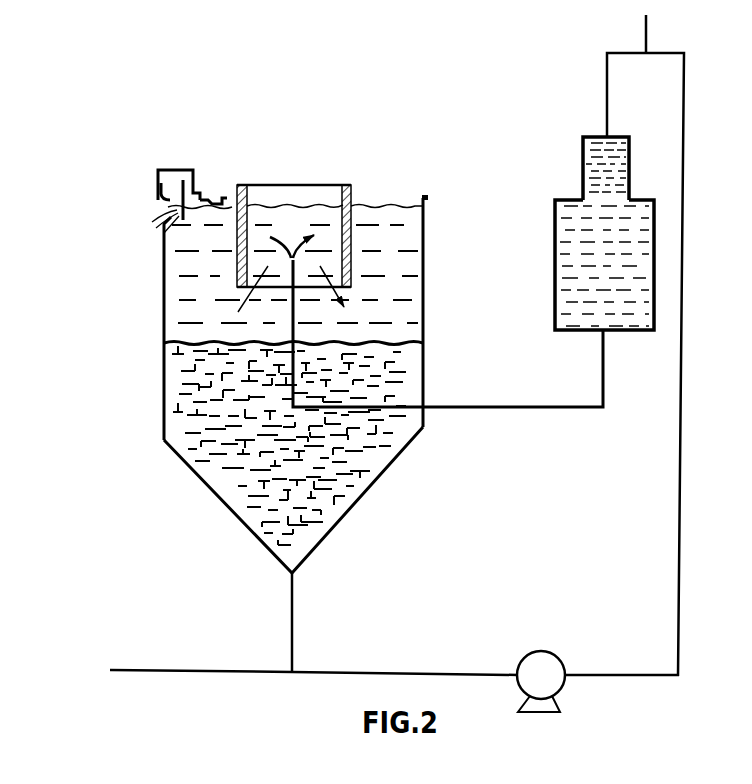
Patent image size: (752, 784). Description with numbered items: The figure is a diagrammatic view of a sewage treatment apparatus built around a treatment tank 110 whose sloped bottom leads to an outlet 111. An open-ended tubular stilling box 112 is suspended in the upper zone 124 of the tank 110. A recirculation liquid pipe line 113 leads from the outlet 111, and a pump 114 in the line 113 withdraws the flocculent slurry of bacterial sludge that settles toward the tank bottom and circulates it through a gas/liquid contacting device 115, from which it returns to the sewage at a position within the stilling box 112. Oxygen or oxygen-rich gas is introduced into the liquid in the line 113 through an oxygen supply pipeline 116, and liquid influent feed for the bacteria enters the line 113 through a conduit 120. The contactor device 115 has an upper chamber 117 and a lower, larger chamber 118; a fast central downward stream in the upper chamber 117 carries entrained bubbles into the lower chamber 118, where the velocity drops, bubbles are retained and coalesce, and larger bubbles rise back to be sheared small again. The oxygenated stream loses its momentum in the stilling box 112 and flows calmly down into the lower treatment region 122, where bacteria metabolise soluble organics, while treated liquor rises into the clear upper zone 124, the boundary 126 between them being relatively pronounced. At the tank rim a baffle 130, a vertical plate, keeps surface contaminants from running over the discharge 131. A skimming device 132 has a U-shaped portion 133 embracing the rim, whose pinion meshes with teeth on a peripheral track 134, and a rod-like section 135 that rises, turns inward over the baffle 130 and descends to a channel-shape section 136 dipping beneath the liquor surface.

The treatment tank 110 is at (158, 470).
The outlet 111 is at (287, 573).
The stilling box 112 is at (352, 190).
The recirculation liquid pipe line 113 is at (397, 673).
The pump 114 is at (552, 663).
The gas/liquid contacting device 115 is at (625, 345).
The oxygen supply pipeline 116 is at (645, 33).
The upper chamber 117 is at (583, 163).
The lower chamber 118 is at (578, 265).
The conduit 120 is at (132, 668).
The lower treatment region 122 is at (367, 487).
The upper zone 124 is at (413, 267).
The boundary 126 is at (423, 344).
The baffle 130 is at (178, 223).
The discharge 131 is at (172, 225).
The skimming device 132 is at (138, 197).
The U-shaped portion 133 is at (158, 188).
The peripheral track 134 is at (428, 199).
The rod-like section 135 is at (172, 170).
The channel-shape section 136 is at (210, 195).